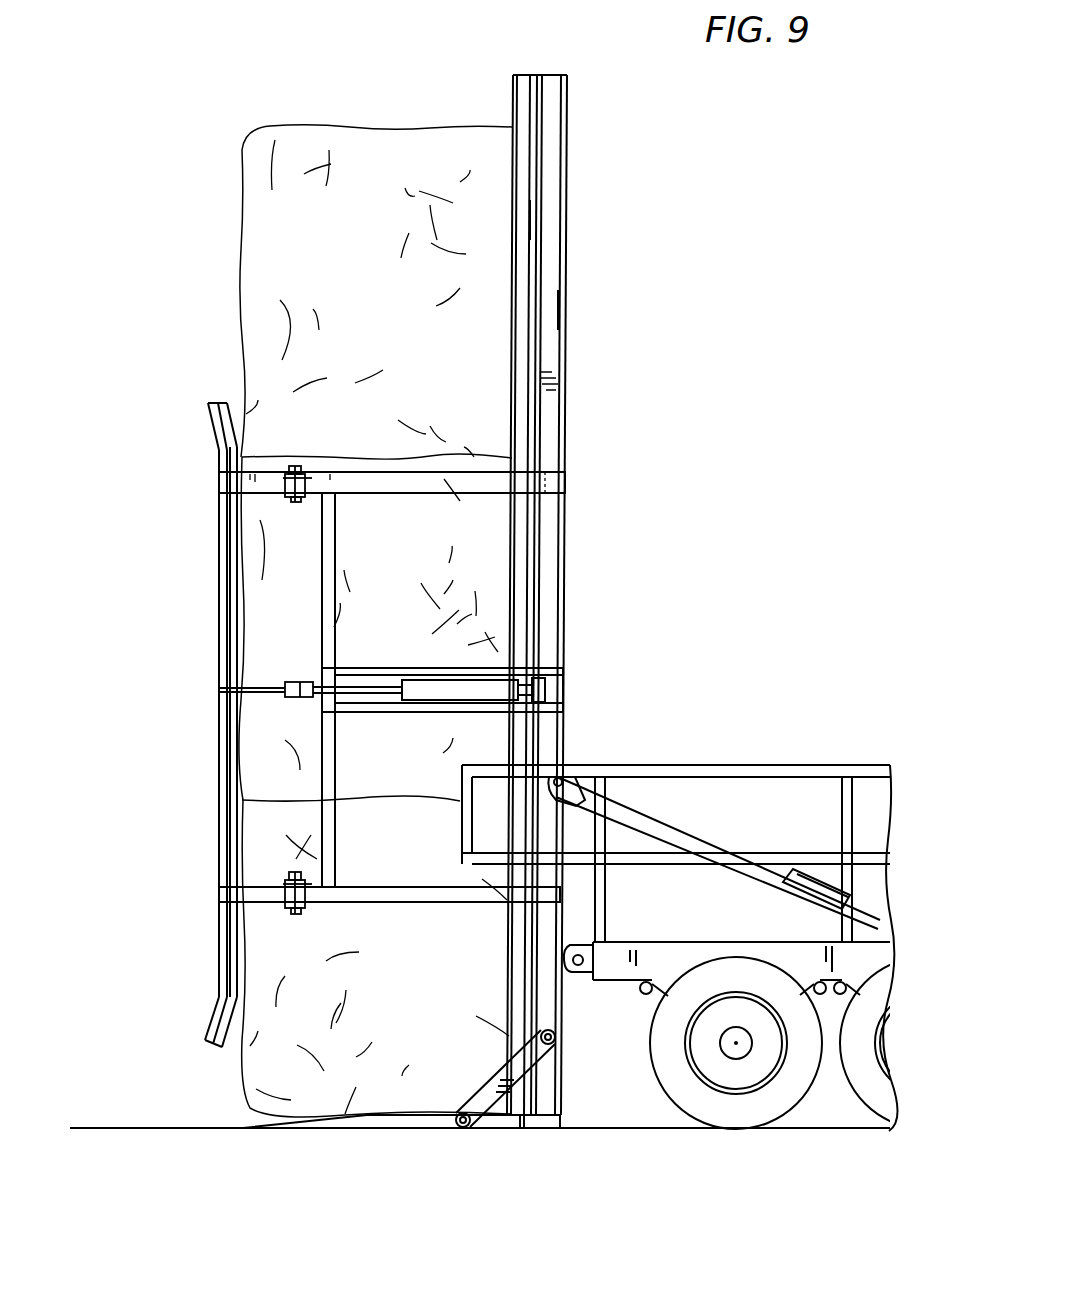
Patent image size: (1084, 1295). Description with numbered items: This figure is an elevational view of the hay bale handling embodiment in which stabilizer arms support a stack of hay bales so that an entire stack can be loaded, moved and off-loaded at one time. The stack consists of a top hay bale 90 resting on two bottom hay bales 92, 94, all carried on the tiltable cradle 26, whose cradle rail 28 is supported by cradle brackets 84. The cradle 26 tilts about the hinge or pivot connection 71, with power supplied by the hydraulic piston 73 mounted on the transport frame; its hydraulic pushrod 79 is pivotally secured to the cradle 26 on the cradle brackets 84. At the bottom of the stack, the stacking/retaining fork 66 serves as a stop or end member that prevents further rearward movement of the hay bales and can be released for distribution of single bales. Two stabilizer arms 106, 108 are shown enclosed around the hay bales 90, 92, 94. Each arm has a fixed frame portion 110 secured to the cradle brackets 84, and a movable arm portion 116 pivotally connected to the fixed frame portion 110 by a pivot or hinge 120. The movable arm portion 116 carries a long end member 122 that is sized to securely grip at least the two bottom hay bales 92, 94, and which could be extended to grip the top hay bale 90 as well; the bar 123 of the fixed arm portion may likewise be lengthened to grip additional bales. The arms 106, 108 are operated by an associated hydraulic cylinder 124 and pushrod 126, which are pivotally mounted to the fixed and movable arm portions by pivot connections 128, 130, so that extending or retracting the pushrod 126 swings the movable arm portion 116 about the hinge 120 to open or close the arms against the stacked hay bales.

The cradle 26 is at (566, 137).
The cradle rail 28 is at (527, 217).
The cradle bracket 84 is at (553, 310).
The top hay bale 90 is at (245, 207).
The hay bale 92 is at (262, 607).
The hay bale 94 is at (245, 962).
The stabilizer arm 106 is at (227, 403).
The stabilizer arm 108 is at (497, 478).
The fixed frame portion 110 is at (327, 608).
The movable arm portion 116 is at (247, 885).
The pivot or hinge 120 is at (298, 468).
The end member 122 is at (222, 735).
The bar 123 is at (326, 545).
The hydraulic cylinder 124 is at (452, 681).
The pushrod 126 is at (372, 694).
The pivot connection 128 is at (284, 700).
The pivot connection 130 is at (545, 684).
The hydraulic pushrod 79 is at (645, 812).
The hydraulic piston 73 is at (790, 900).
The hinge or pivot connection 71 is at (577, 975).
The stacking/retaining fork 66 is at (392, 1113).